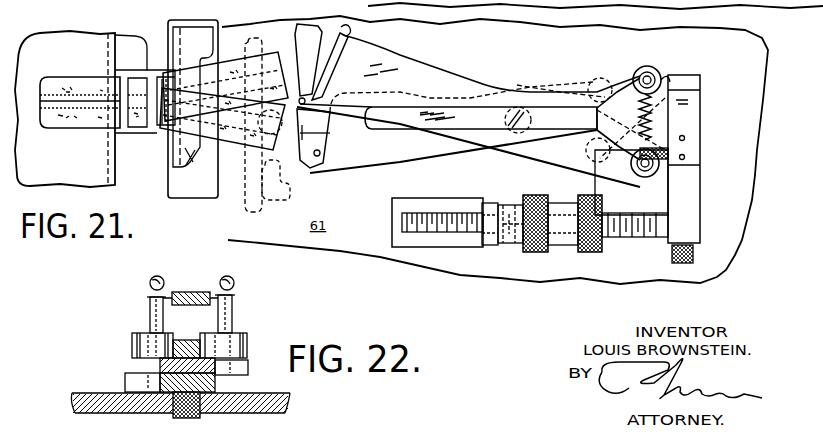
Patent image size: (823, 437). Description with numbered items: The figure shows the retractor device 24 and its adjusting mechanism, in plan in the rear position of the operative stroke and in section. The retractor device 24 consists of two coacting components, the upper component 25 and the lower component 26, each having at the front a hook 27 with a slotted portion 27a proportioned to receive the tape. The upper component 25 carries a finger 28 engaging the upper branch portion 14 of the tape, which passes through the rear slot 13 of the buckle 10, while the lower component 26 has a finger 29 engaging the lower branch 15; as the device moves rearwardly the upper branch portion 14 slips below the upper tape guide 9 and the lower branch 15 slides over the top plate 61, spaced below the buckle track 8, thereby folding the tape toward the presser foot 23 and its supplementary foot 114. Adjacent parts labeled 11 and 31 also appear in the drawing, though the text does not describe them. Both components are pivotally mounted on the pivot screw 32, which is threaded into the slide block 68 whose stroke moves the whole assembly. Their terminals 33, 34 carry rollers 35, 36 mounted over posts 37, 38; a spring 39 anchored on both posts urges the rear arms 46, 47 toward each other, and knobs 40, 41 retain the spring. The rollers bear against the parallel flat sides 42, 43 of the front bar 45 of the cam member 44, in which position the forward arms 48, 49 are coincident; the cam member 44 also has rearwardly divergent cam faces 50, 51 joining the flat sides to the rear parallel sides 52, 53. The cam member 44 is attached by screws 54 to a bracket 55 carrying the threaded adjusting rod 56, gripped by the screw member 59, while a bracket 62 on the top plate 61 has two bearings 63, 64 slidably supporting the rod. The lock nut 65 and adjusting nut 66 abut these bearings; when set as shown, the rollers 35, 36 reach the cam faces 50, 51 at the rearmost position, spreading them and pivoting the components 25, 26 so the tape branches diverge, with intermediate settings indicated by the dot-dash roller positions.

In FIG. 21, the buckle track 8 is at (201, 194).
In FIG. 21, the upper tape guide 9 is at (192, 163).
In FIG. 21, the buckle 10 is at (154, 72).
In FIG. 21, the knurled knob 11 is at (72, 76).
In FIG. 21, the rear slot 13 is at (143, 129).
In FIG. 21, the upper branch portion 14 is at (276, 61).
In FIG. 21, the lower branch 15 is at (228, 137).
In FIG. 21, the presser foot 23 is at (284, 186).
In FIG. 21, the retractor device 24 is at (487, 78).
In FIG. 21, the upper component 25 is at (562, 152).
In FIG. 22, the upper component 25 is at (160, 366).
In FIG. 21, the lower component 26 is at (557, 93).
In FIG. 22, the lower component 26 is at (215, 384).
In FIG. 21, the hook 27 is at (335, 26).
In FIG. 21, the slotted portion 27a is at (347, 30).
In FIG. 21, the finger 28 is at (302, 26).
In FIG. 21, the finger 29 is at (325, 132).
In FIG. 21, the housing 31 is at (46, 44).
In FIG. 21, the pivot screw 32 is at (519, 107).
In FIG. 21, the terminal 33 is at (667, 170).
In FIG. 21, the terminal 34 is at (661, 70).
In FIG. 21, the roller 35 is at (594, 160).
In FIG. 22, the roller 35 is at (247, 345).
In FIG. 21, the roller 36 is at (598, 82).
In FIG. 22, the roller 36 is at (132, 349).
In FIG. 22, the post 37 is at (232, 318).
In FIG. 22, the post 38 is at (150, 314).
In FIG. 21, the spring 39 is at (653, 125).
In FIG. 22, the spring 39 is at (189, 291).
In FIG. 22, the knob 40 is at (231, 277).
In FIG. 22, the knob 41 is at (155, 276).
In FIG. 21, the flat side 42 is at (416, 126).
In FIG. 21, the flat side 43 is at (431, 105).
In FIG. 21, the cam member 44 is at (488, 138).
In FIG. 21, the front bar 45 is at (458, 122).
In FIG. 22, the front bar 45 is at (190, 340).
In FIG. 21, the rear arm 46 is at (626, 170).
In FIG. 22, the rear arm 46 is at (248, 370).
In FIG. 21, the rear arm 47 is at (617, 73).
In FIG. 22, the rear arm 47 is at (125, 383).
In FIG. 21, the forward arm 48 is at (409, 60).
In FIG. 21, the forward arm 49 is at (383, 160).
In FIG. 21, the cam face 50 is at (598, 134).
In FIG. 21, the cam face 51 is at (607, 93).
In FIG. 21, the rear parallel side 52 is at (666, 150).
In FIG. 21, the rear parallel side 53 is at (669, 96).
In FIG. 21, the screws 54 is at (686, 138).
In FIG. 21, the bracket 55 is at (700, 198).
In FIG. 21, the threaded adjusting rod 56 is at (633, 240).
In FIG. 21, the screw member 59 is at (695, 253).
In FIG. 22, the top plate 61 is at (79, 397).
In FIG. 21, the bracket 62 is at (392, 222).
In FIG. 21, the bearing 63 is at (492, 246).
In FIG. 21, the bearing 64 is at (558, 247).
In FIG. 21, the lock nut 65 is at (583, 254).
In FIG. 21, the adjusting nut 66 is at (536, 254).
In FIG. 22, the slide block 68 is at (200, 415).
In FIG. 21, the supplementary foot 114 is at (253, 37).